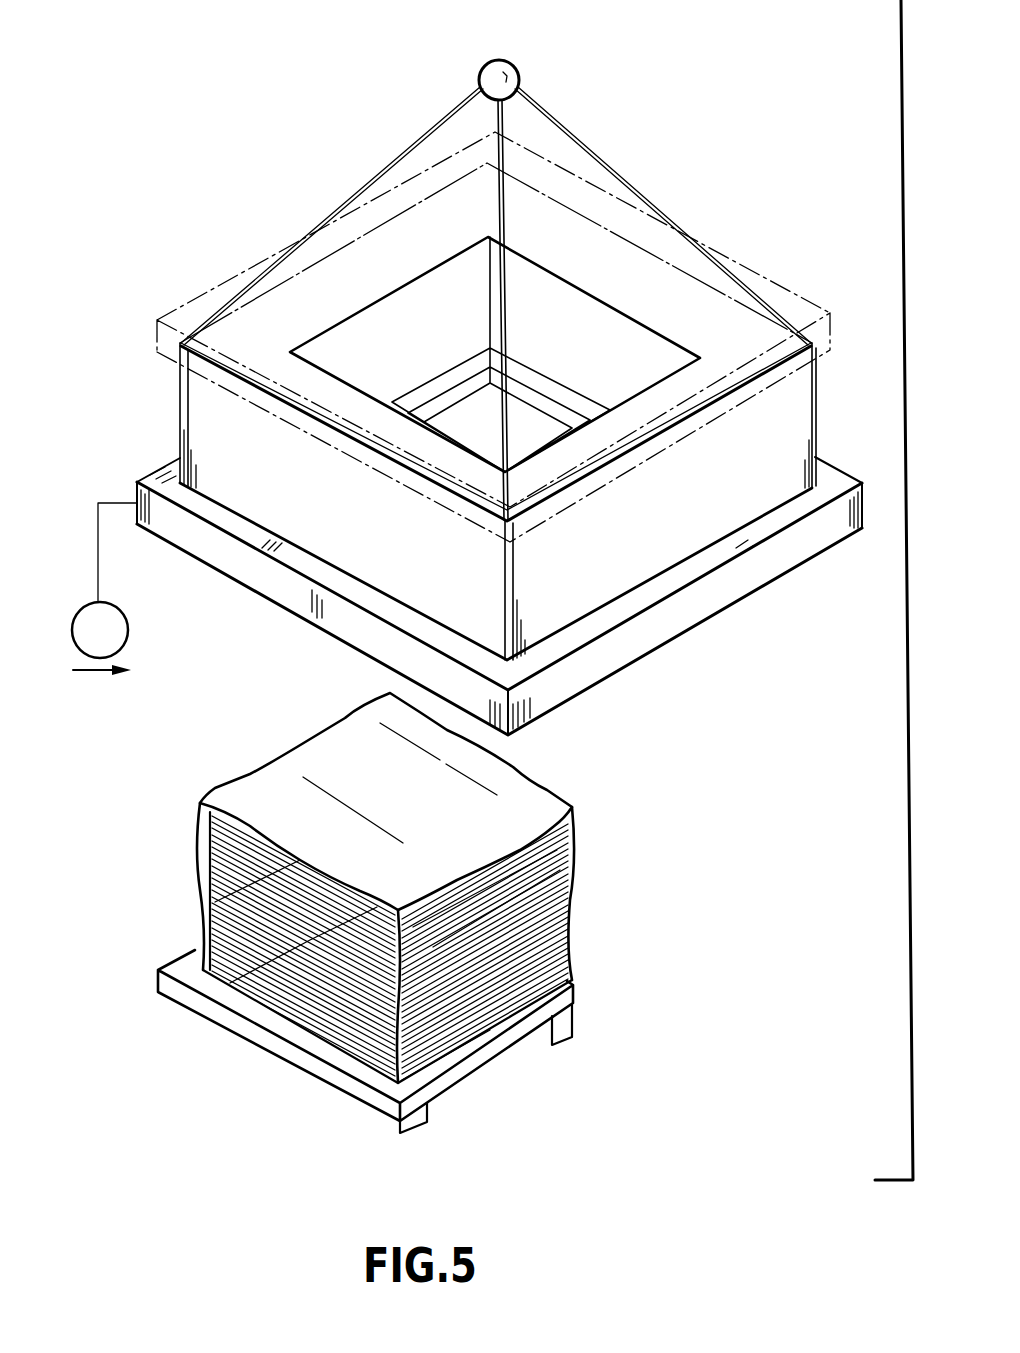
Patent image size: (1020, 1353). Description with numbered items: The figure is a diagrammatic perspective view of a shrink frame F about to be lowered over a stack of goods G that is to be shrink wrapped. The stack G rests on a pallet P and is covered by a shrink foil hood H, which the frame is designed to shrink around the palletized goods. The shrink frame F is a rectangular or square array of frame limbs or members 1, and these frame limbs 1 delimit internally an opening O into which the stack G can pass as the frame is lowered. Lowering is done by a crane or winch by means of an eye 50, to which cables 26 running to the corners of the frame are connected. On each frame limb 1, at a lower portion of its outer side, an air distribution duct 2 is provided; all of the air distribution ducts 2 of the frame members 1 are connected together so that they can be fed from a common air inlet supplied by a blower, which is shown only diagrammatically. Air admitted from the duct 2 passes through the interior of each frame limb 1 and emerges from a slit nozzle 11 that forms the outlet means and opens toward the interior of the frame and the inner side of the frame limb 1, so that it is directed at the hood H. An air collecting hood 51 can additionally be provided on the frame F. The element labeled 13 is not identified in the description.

The eye 50 is at (519, 78).
The cables 26 is at (417, 147).
The opening O is at (530, 297).
The air collecting hood 51 is at (677, 290).
The slit nozzle 11 is at (458, 396).
The frame limb 1 is at (334, 536).
The air distribution duct 2 is at (727, 587).
The suction line with pump 13 is at (127, 632).
The shrink frame F is at (504, 406).
The stack of goods G is at (427, 888).
The shrink foil hood H is at (573, 910).
The pallet P is at (443, 1068).